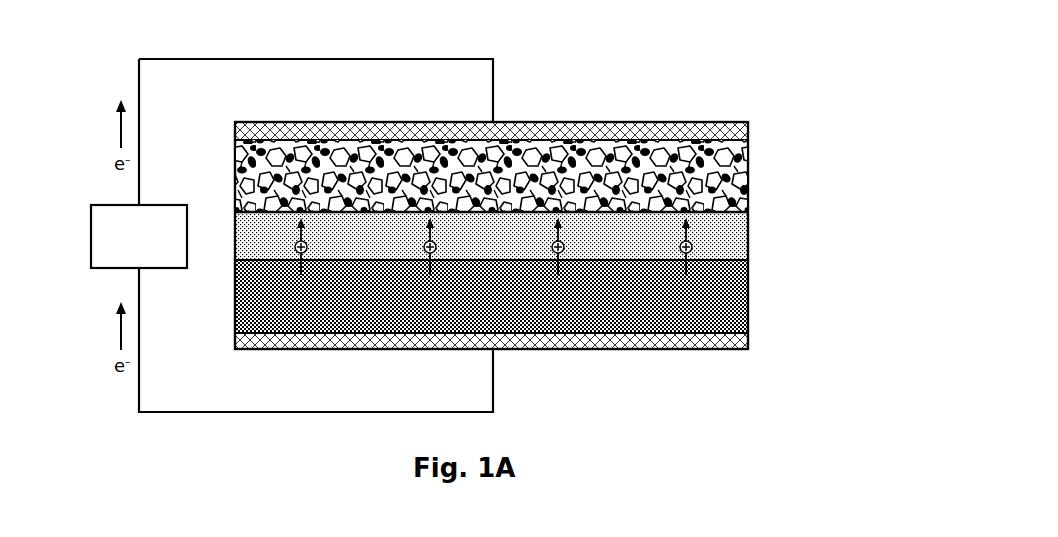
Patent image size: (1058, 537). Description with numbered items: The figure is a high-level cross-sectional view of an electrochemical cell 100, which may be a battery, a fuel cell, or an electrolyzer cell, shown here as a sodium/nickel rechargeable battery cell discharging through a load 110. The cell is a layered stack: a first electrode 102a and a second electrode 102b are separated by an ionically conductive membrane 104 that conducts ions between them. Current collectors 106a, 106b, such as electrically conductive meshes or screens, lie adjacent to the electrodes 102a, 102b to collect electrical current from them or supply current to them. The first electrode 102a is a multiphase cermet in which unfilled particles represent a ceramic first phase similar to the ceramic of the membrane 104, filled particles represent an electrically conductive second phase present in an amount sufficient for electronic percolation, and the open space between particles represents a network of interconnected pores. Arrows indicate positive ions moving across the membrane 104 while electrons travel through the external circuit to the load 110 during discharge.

The electrochemical cell 100 is at (614, 66).
The load 110 is at (91, 238).
The current collector 106a is at (748, 134).
The first electrode 102a is at (748, 172).
The ionically conductive membrane 104 is at (748, 238).
The second electrode 102b is at (748, 300).
The current collector 106b is at (748, 342).